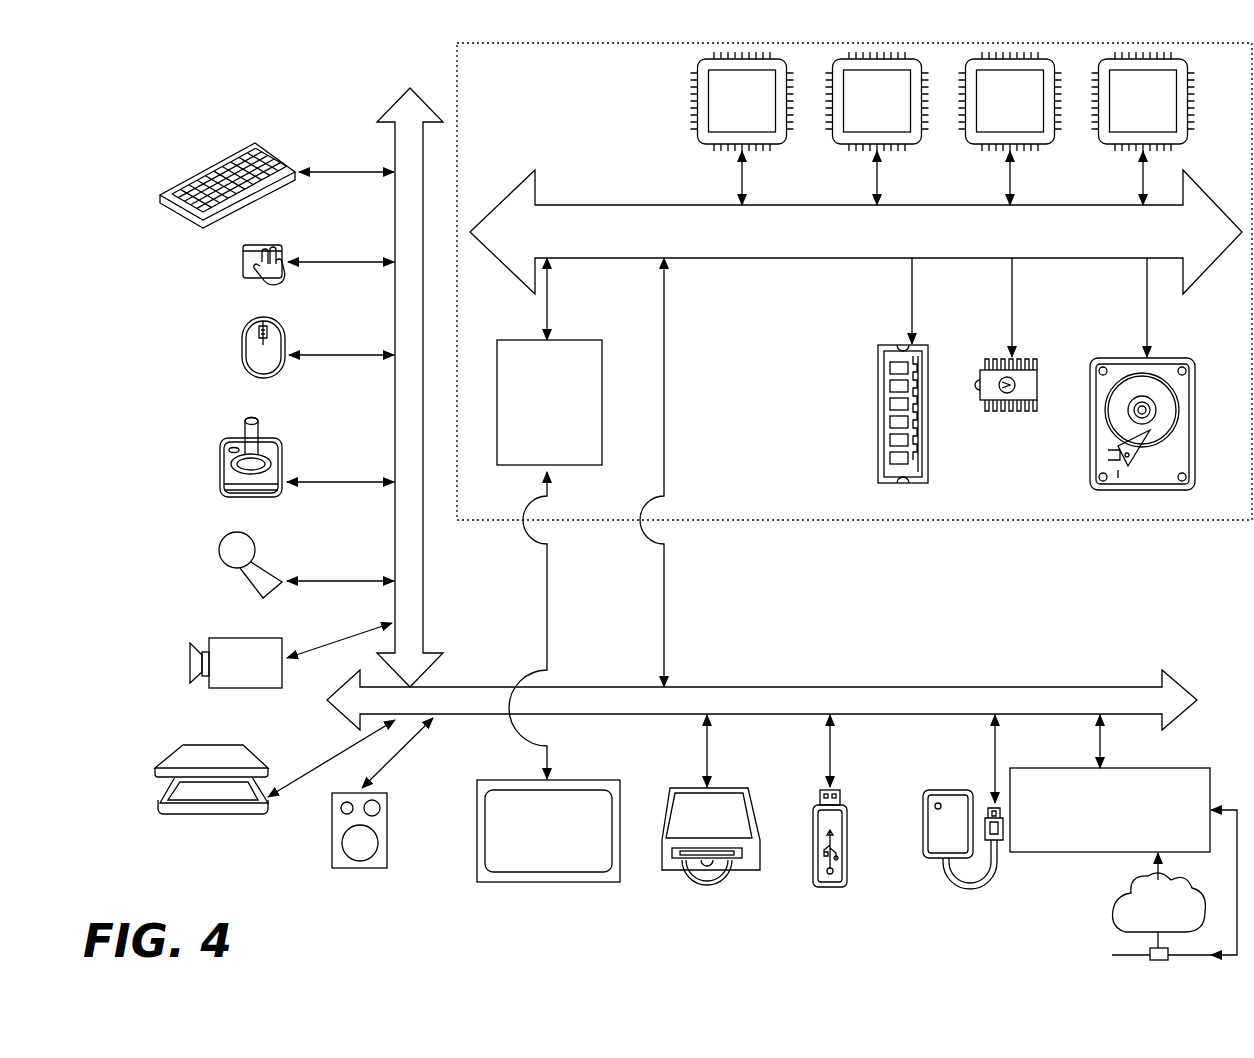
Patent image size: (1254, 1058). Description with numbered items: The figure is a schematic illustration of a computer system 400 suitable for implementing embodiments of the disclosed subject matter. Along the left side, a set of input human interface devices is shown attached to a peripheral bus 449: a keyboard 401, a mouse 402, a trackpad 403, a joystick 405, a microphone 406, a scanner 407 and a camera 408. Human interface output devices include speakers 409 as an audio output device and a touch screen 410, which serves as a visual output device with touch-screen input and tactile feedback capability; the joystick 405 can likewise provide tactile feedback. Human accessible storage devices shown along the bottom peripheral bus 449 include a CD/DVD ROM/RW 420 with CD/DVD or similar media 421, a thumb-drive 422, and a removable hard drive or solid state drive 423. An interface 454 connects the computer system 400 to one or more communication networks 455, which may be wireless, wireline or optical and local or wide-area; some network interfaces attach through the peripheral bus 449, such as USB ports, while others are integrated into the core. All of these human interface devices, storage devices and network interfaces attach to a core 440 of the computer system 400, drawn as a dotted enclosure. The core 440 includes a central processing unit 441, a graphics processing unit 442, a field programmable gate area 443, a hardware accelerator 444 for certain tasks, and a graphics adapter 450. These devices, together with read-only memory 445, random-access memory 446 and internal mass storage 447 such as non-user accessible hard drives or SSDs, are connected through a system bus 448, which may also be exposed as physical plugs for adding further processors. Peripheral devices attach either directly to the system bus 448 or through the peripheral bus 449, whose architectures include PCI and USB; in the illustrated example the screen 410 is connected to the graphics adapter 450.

The computer system 400 is at (205, 127).
The keyboard 401 is at (160, 197).
The mouse 402 is at (243, 352).
The trackpad 403 is at (243, 270).
The joystick 405 is at (220, 482).
The microphone 406 is at (220, 553).
The scanner 407 is at (158, 806).
The camera 408 is at (190, 665).
The speakers 409 is at (356, 868).
The touch screen 410 is at (547, 882).
The CD/DVD ROM/RW 420 is at (755, 874).
The CD/DVD media 421 is at (692, 877).
The thumb-drive 422 is at (830, 888).
The removable hard drive or solid state drive 423 is at (934, 860).
The core 440 is at (848, 522).
The Central Processing Unit 441 is at (742, 128).
The Graphics Processing Unit 442 is at (877, 128).
The Field Programmable Gate Area 443 is at (1010, 128).
The hardware accelerator 444 is at (1143, 128).
The Read-only memory 445 is at (1000, 413).
The Random-access memory 446 is at (877, 443).
The internal mass storage 447 is at (1103, 357).
The system bus 448 is at (856, 232).
The peripheral bus 449 is at (394, 133).
The graphics adapter 450 is at (549, 518).
The network interface 454 is at (1123, 835).
The communication network 455 is at (1113, 922).